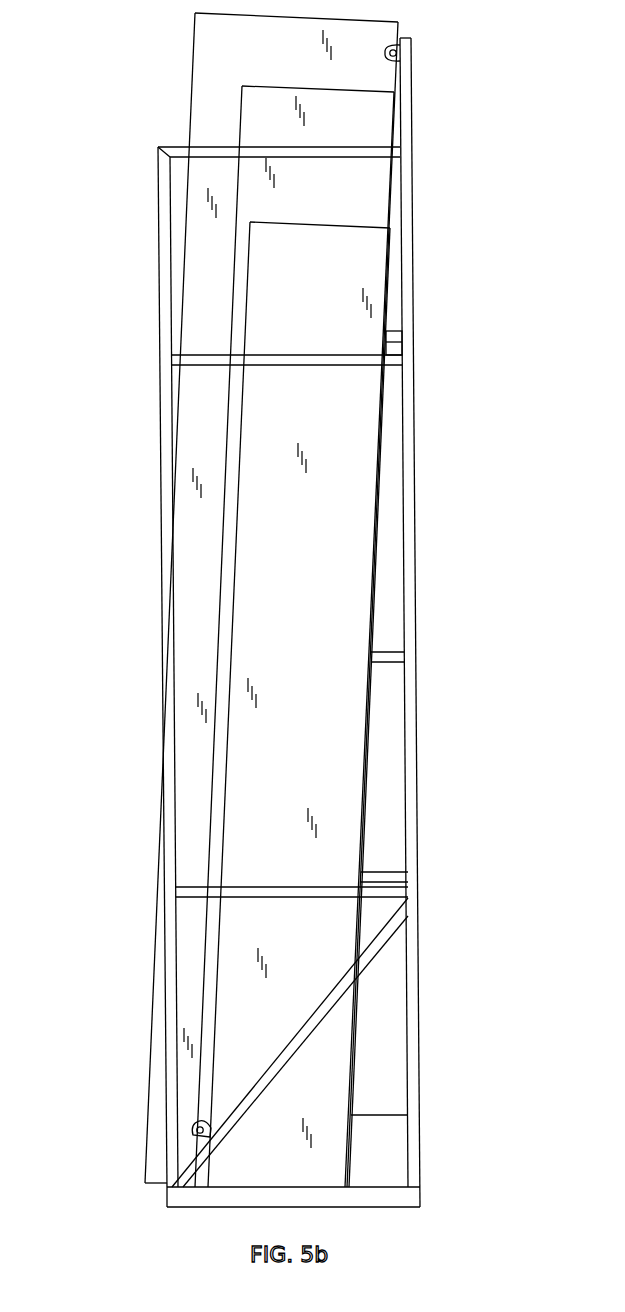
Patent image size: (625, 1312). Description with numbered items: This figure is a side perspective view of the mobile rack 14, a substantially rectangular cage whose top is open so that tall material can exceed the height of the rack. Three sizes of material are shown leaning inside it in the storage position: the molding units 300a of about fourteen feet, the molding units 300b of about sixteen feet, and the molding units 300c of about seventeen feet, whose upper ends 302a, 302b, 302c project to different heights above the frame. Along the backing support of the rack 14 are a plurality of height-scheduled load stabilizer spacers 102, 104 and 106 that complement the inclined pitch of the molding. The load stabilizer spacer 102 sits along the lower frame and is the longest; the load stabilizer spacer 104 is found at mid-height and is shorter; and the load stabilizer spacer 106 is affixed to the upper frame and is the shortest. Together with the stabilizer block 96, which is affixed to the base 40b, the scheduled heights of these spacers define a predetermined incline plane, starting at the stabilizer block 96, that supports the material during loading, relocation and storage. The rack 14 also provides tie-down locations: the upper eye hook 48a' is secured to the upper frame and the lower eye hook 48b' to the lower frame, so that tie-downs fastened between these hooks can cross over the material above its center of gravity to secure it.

The rack 14 is at (408, 483).
The base 40b is at (402, 1198).
The stabilizer block 96 is at (390, 1143).
The load stabilizer spacer 102 is at (400, 878).
The load stabilizer spacer 104 is at (397, 657).
The load stabilizer spacer 106 is at (395, 338).
The upper eye hook 48a' is at (471, 39).
The lower eye hook 48b' is at (126, 1146).
The molding units 300a is at (228, 704).
The molding units 300b is at (221, 636).
The molding units 300c is at (210, 600).
The top edge of first pane 302a is at (257, 223).
The top edge of second pane 302b is at (256, 88).
The top edge of third pane 302c is at (257, 17).